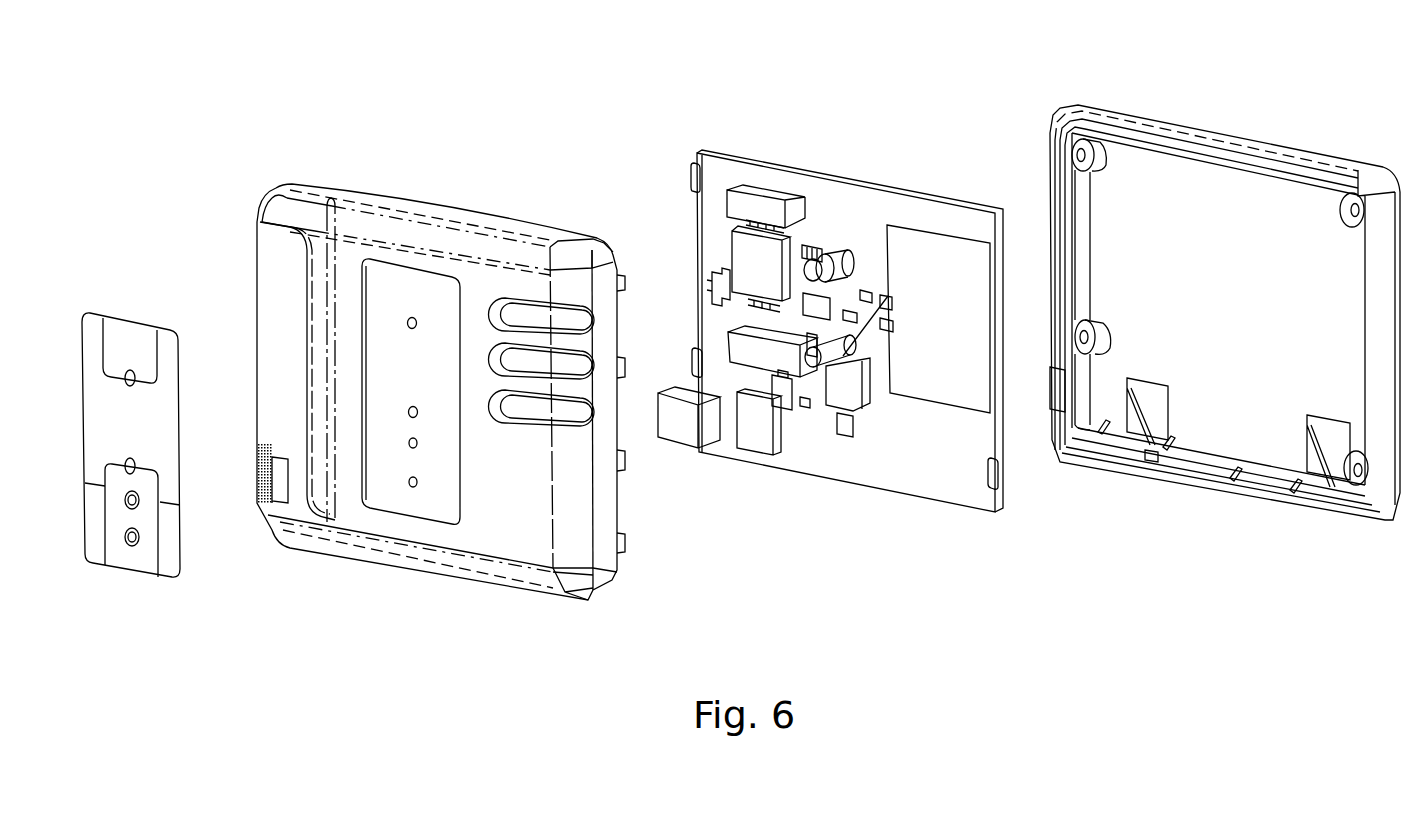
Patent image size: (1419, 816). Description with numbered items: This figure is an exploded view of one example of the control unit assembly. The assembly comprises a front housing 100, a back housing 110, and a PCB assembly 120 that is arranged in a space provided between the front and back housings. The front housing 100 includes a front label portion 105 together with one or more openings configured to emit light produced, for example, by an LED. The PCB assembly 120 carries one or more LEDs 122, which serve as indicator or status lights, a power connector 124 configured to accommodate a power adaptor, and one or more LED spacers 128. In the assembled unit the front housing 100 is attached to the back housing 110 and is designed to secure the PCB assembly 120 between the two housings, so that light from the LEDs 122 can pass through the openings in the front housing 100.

The front housing 100 is at (439, 208).
The front label portion 105 is at (182, 543).
The back housing 110 is at (1248, 138).
The PCB assembly 120 is at (877, 487).
The LED 122 is at (815, 358).
The power connector 124 is at (682, 433).
The LED spacer 128 is at (888, 295).